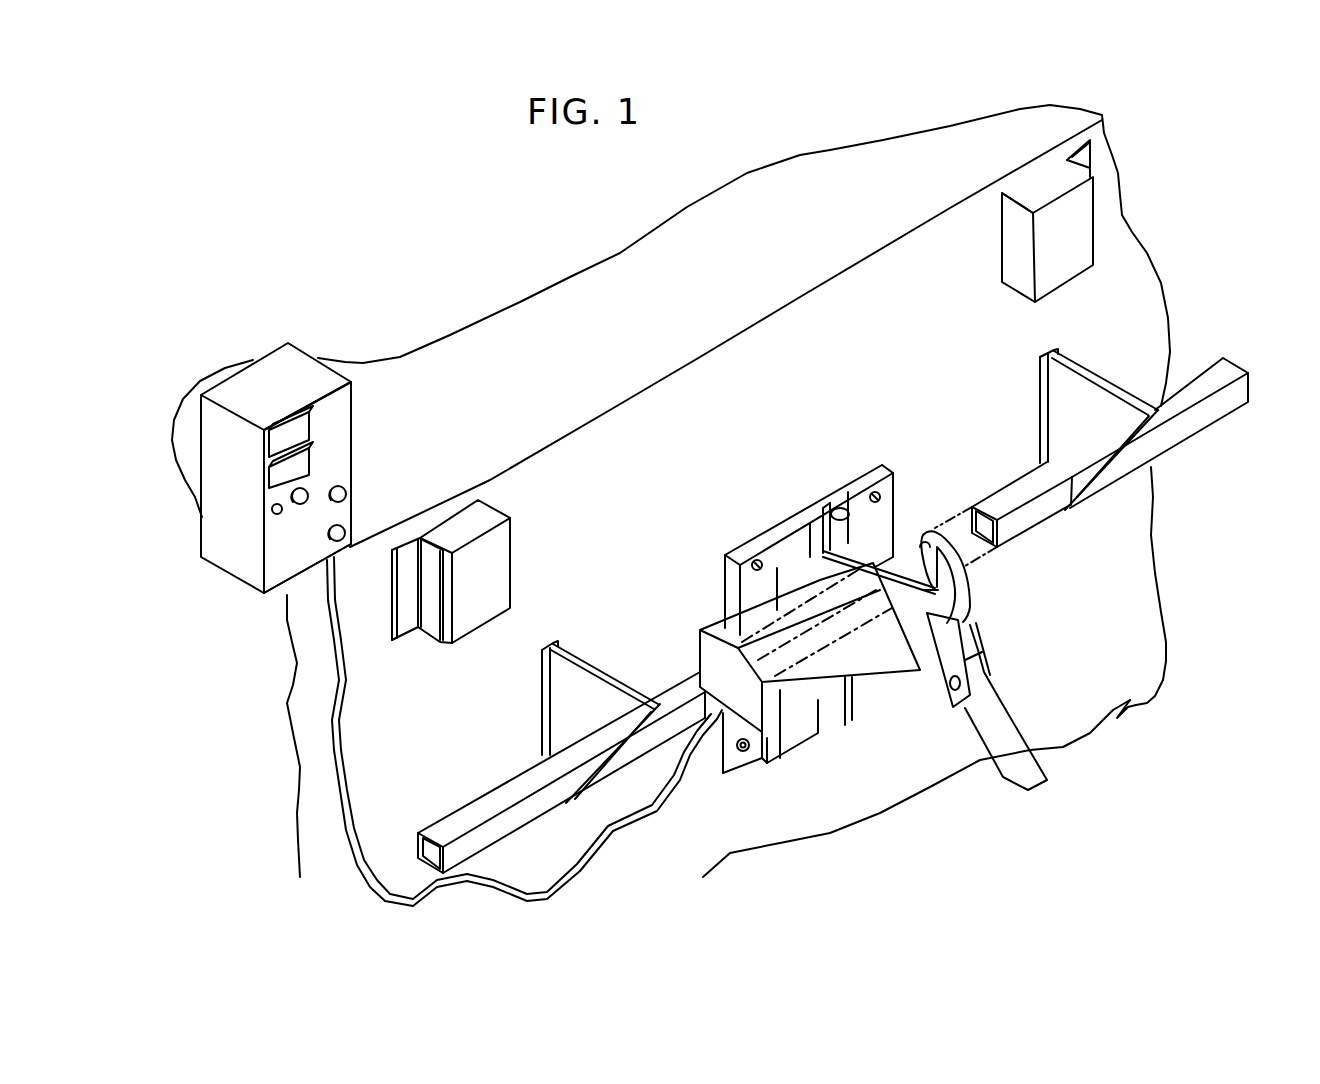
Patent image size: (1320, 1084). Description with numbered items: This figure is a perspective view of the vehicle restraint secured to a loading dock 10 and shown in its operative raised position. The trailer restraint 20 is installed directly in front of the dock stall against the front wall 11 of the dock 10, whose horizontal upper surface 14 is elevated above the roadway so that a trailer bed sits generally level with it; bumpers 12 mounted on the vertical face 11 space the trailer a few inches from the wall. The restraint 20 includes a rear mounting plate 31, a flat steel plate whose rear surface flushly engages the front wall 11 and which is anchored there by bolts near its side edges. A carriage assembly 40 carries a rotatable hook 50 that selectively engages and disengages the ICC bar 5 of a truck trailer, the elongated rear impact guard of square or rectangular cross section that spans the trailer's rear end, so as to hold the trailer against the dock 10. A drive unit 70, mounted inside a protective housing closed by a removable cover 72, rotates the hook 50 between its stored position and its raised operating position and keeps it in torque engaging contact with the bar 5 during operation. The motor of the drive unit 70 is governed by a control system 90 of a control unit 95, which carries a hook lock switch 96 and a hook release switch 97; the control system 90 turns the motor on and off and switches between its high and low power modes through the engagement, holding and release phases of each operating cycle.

The ICC bar 5 is at (1207, 377).
The loading dock 10 is at (887, 163).
The front wall 11 is at (1130, 278).
The bumpers 12 is at (1085, 215).
The upper surface 14 is at (765, 193).
The trailer restraint 20 is at (825, 558).
The rear mounting plate 31 is at (757, 543).
The carriage assembly 40 is at (985, 628).
The hook 50 is at (975, 588).
The drive unit 70 is at (733, 623).
The removable cover 72 is at (722, 608).
The control system 90 is at (299, 512).
The control unit 95 is at (277, 574).
The hook lock switch 96 is at (348, 493).
The hook release switch 97 is at (350, 536).